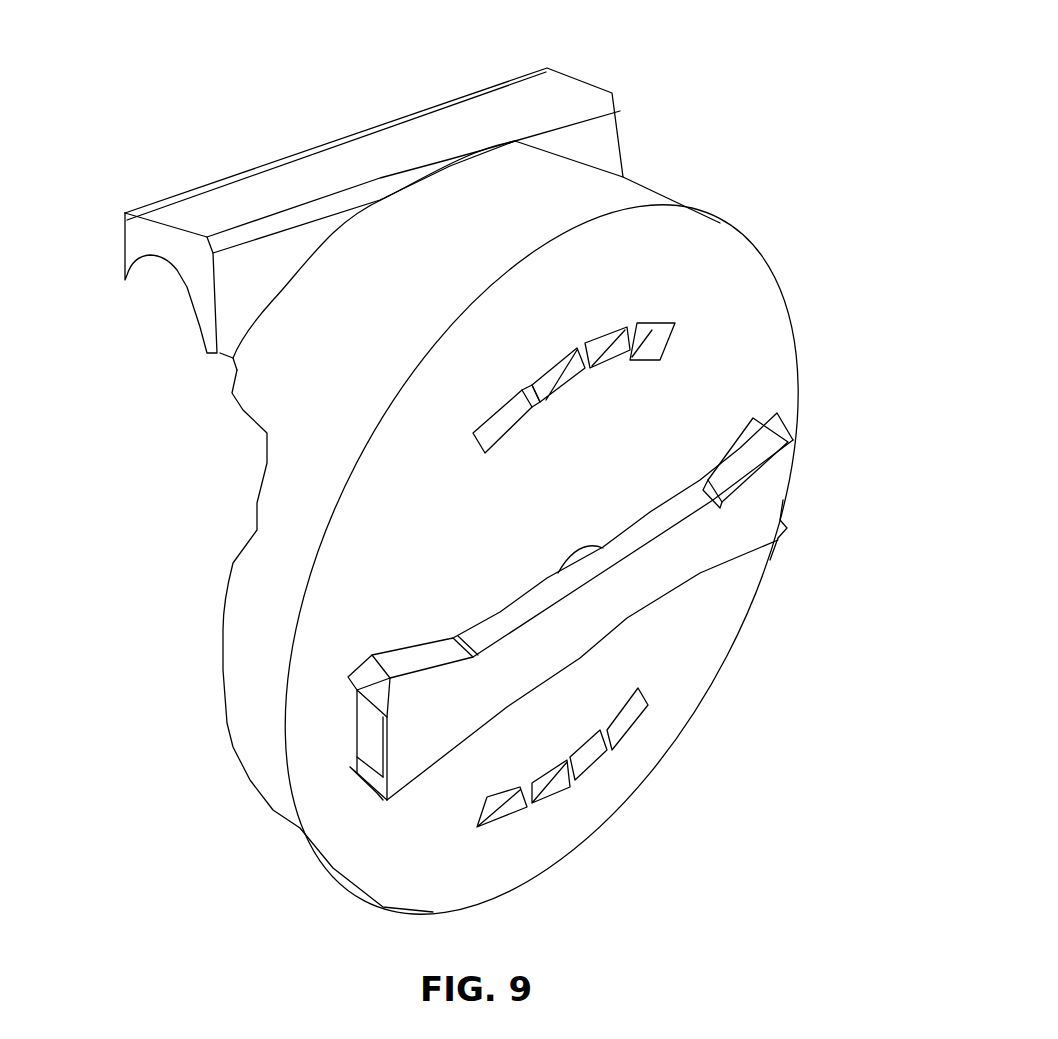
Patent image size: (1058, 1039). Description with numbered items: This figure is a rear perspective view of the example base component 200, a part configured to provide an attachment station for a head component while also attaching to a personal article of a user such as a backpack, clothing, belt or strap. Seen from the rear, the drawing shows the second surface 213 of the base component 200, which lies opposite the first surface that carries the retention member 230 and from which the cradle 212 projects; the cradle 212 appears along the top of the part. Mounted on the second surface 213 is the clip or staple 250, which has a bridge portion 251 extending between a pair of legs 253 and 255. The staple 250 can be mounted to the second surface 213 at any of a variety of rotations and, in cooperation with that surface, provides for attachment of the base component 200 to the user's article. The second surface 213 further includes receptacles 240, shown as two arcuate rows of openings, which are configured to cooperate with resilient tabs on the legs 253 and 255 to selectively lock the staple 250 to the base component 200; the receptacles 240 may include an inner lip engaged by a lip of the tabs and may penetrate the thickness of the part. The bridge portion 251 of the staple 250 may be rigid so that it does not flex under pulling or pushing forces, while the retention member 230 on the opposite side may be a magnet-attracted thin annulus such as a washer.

The base component 200 is at (170, 106).
The cradle 212 is at (607, 94).
The second surface 213 is at (730, 280).
The retention member 230 is at (640, 628).
The receptacles 240 is at (647, 290).
The staple 250 is at (300, 710).
The bridge portion 251 is at (653, 517).
The leg 253 is at (787, 530).
The leg 255 is at (355, 781).